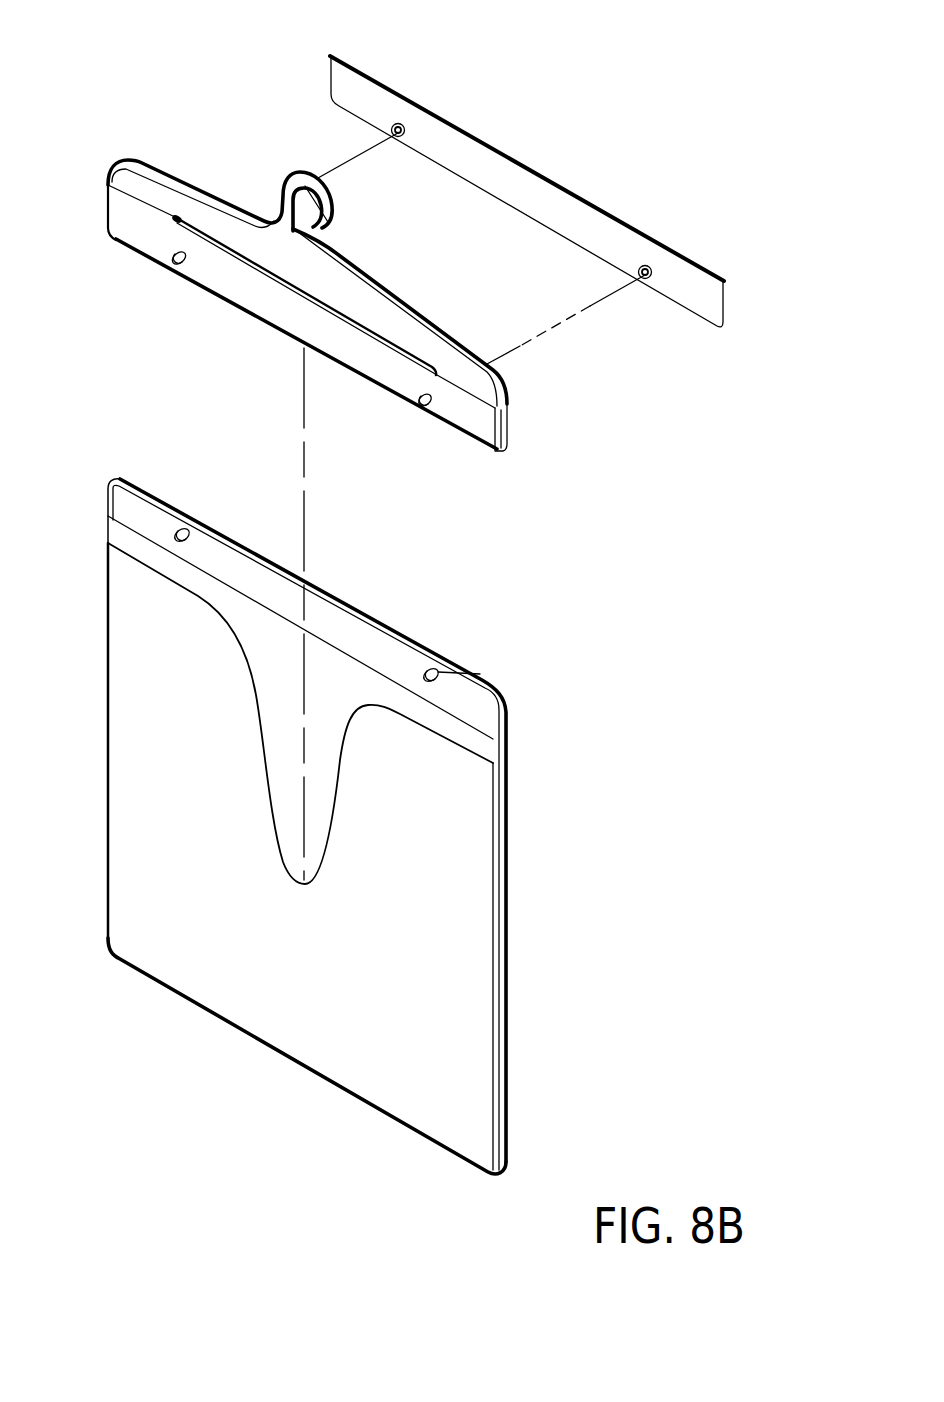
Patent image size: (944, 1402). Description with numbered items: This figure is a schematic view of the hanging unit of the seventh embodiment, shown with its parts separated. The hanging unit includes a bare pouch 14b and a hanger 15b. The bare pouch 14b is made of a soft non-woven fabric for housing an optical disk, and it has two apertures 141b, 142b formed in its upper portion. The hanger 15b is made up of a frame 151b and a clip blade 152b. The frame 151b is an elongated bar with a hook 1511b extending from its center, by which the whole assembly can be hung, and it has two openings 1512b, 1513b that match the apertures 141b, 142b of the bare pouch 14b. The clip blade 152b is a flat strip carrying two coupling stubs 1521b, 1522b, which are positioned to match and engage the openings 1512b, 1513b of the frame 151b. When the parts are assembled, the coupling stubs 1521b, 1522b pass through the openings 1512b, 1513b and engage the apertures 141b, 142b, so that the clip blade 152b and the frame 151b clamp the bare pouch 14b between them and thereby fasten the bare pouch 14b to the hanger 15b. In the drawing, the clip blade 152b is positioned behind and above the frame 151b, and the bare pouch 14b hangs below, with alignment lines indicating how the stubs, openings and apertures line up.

The hanger 15b is at (211, 142).
The frame 151b is at (138, 182).
The hook 1511b is at (323, 228).
The opening 1512b is at (173, 262).
The opening 1513b is at (424, 406).
The clip blade 152b is at (523, 190).
The coupling stub 1521b is at (400, 124).
The coupling stub 1522b is at (645, 265).
The bare pouch 14b is at (458, 937).
The aperture 141b is at (182, 528).
The aperture 142b is at (504, 708).